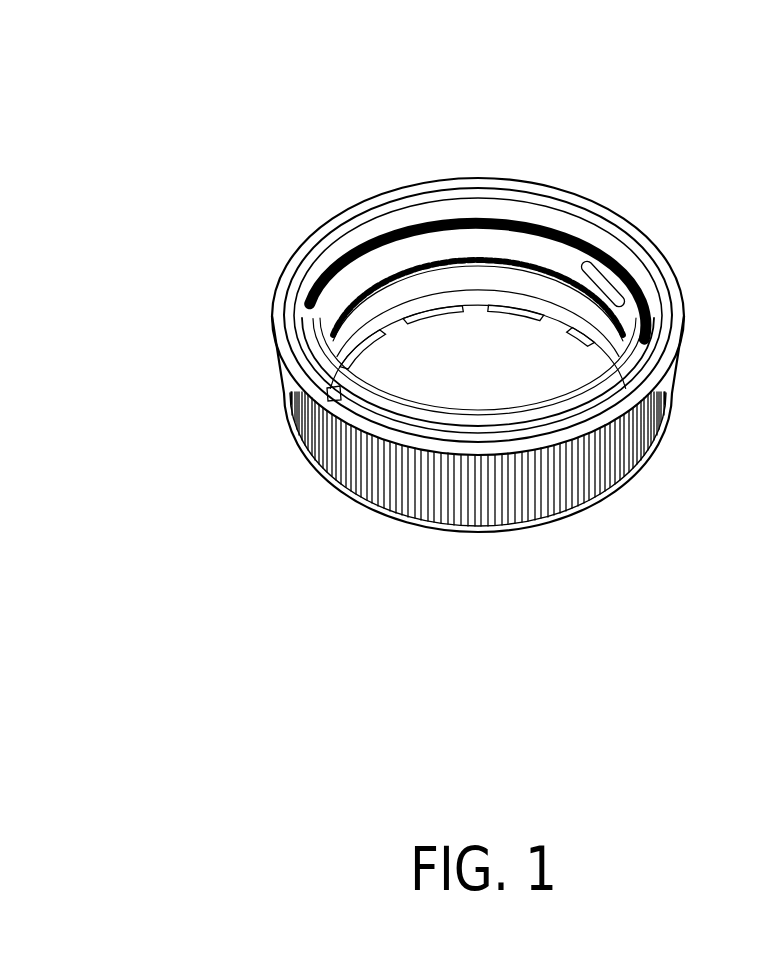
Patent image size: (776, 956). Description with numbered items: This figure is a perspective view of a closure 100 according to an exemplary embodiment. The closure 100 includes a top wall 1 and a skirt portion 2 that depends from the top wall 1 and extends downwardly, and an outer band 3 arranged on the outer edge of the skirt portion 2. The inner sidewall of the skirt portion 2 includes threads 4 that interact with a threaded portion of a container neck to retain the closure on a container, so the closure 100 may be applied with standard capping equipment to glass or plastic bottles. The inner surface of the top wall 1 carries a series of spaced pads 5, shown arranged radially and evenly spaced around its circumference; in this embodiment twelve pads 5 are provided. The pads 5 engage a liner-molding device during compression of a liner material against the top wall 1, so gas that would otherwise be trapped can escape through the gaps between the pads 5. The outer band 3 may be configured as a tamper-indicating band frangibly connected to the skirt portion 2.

The closure 100 is at (90, 70).
The top wall 1 is at (380, 365).
The skirt portion 2 is at (363, 503).
The outer band 3 is at (675, 272).
The threads 4 is at (380, 260).
The pads 5 is at (528, 310).